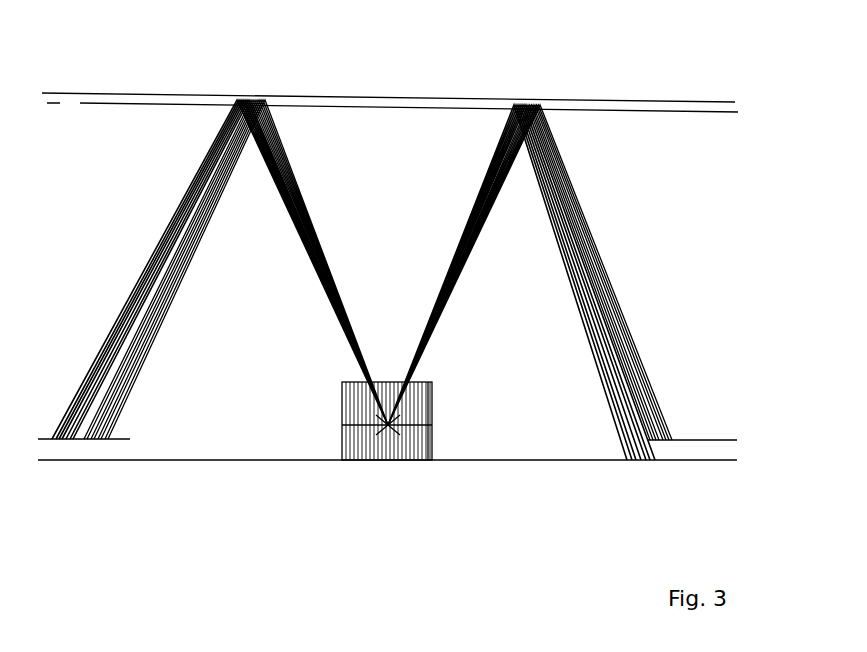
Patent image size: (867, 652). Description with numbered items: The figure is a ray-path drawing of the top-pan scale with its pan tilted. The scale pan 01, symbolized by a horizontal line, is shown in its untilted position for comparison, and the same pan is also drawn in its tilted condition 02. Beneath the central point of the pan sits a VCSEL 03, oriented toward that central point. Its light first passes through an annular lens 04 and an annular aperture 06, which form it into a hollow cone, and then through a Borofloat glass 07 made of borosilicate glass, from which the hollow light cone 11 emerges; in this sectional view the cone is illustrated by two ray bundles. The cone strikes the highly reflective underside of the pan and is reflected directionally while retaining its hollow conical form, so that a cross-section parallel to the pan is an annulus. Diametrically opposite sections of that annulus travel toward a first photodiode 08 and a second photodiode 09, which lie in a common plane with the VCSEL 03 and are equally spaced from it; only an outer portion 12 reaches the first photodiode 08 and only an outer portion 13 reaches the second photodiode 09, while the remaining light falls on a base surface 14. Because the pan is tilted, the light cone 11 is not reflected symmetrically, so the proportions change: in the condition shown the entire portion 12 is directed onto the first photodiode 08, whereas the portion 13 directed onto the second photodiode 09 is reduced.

The scale pan 01 is at (705, 102).
The tilted condition of scale pan 02 is at (70, 95).
The VCSEL 03 is at (382, 428).
The annular lens 04 is at (397, 427).
The annular aperture 06 is at (362, 435).
The Borofloat glass 07 is at (428, 413).
The first photodiode 08 is at (72, 442).
The second photodiode 09 is at (717, 442).
The hollow light cone 11 is at (305, 245).
The outer portion of light cone 12 is at (88, 428).
The outer portion of light cone 13 is at (667, 428).
The base surface 14 is at (193, 462).